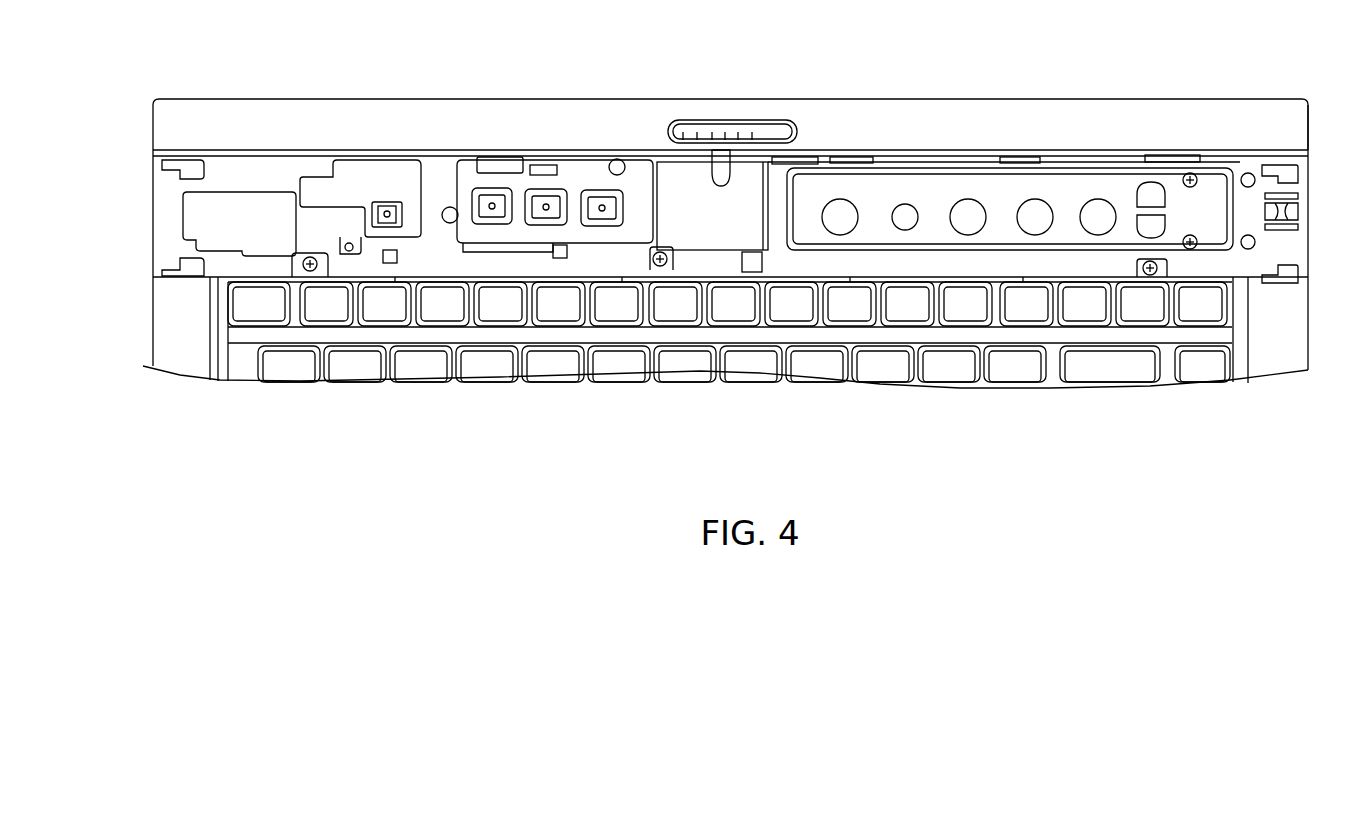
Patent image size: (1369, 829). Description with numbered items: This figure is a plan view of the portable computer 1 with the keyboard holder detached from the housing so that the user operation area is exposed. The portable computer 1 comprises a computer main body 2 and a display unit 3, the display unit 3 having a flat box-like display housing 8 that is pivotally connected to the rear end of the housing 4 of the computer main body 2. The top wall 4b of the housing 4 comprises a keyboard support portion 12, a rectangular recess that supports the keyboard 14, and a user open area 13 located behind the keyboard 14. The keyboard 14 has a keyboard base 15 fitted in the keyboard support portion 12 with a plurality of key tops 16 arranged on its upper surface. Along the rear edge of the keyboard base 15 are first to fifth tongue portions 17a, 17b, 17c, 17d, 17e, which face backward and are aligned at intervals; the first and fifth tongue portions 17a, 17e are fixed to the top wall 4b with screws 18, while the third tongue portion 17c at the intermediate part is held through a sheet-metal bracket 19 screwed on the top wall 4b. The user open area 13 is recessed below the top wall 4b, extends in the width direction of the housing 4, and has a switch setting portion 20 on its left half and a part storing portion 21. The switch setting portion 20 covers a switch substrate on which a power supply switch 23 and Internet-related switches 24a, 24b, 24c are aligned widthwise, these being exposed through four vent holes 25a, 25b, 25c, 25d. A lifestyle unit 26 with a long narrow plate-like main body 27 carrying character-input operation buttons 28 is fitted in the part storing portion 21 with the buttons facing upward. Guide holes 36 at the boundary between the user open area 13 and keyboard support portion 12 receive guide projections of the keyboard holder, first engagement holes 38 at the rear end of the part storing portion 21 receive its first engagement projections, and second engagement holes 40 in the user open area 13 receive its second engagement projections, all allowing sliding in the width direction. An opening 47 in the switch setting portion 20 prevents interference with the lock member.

The portable computer 1 is at (1252, 62).
The computer main body 2 is at (175, 377).
The display unit 3 is at (225, 99).
The housing 4 is at (1272, 366).
The top wall 4b is at (1292, 357).
The display housing 8 is at (1290, 110).
The keyboard support portion 12 is at (232, 360).
The user open area 13 is at (683, 183).
The keyboard 14 is at (430, 366).
The keyboard base 15 is at (256, 360).
The key tops 16 is at (946, 382).
The first tongue portion 17a is at (326, 284).
The second tongue portion 17b is at (508, 284).
The third tongue portion 17c is at (742, 290).
The fourth tongue portion 17d is at (960, 290).
The fifth tongue portion 17e is at (1162, 330).
The screws 18 is at (311, 272).
The bracket 19 is at (736, 266).
The switch setting portion 20 is at (445, 178).
The part storing portion 21 is at (975, 166).
The power supply switch 23 is at (387, 205).
The switch 24a is at (493, 204).
The switch 24b is at (547, 205).
The switch 24c is at (603, 206).
The vent hole 25a is at (322, 176).
The vent hole 25b is at (480, 190).
The vent hole 25c is at (597, 190).
The vent hole 25d is at (642, 205).
The lifestyle unit 26 is at (877, 190).
The main body 27 is at (838, 176).
The operation buttons 28 is at (1040, 212).
The guide holes 36 is at (398, 284).
The first engagement holes 38 is at (805, 158).
The second engagement holes 40 is at (172, 165).
The opening 47 is at (258, 195).